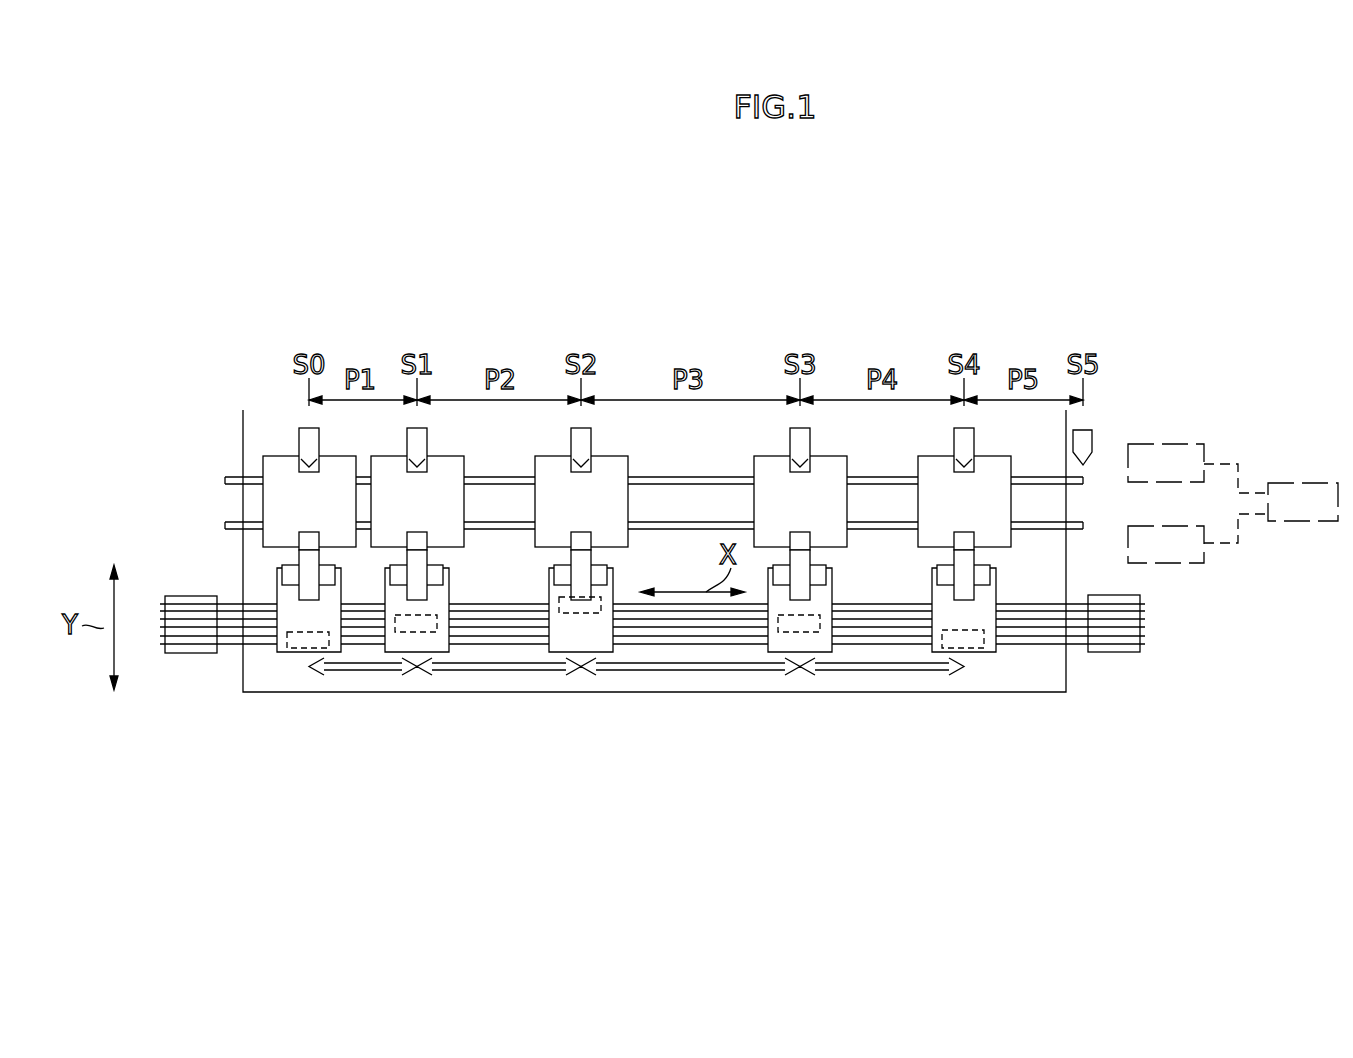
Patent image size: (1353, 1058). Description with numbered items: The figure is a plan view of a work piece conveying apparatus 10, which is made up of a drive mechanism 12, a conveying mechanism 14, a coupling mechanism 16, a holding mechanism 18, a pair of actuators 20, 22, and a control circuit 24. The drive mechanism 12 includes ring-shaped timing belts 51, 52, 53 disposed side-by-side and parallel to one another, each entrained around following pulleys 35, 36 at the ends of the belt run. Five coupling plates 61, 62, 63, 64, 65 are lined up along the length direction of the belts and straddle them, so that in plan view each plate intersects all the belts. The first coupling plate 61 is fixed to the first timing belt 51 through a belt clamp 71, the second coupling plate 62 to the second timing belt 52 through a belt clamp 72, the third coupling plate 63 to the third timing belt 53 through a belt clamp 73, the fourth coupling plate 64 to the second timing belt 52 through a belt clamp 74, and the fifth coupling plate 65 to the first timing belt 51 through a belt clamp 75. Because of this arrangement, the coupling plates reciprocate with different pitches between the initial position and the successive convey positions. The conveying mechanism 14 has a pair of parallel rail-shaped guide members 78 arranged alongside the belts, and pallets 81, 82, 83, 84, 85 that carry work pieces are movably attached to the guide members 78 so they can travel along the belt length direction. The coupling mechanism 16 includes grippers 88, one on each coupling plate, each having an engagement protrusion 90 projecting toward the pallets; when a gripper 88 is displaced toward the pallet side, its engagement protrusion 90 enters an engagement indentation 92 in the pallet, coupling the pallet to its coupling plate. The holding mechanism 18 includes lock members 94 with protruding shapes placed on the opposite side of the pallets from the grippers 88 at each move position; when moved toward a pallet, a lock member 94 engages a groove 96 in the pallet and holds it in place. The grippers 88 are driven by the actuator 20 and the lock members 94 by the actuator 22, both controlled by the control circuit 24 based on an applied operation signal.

The work piece conveying apparatus 10 is at (692, 284).
The drive mechanism 12 is at (164, 672).
The conveying mechanism 14 is at (157, 503).
The coupling mechanism 16 is at (223, 583).
The holding mechanism 18 is at (266, 433).
The actuator 20 is at (1196, 564).
The actuator 22 is at (1187, 443).
The control circuit 24 is at (1320, 483).
The following pulley 35 is at (190, 654).
The following pulley 36 is at (1113, 653).
The timing belt 51 is at (1008, 646).
The timing belt 52 is at (1033, 630).
The timing belt 53 is at (1052, 612).
The first coupling plate 61 is at (282, 652).
The second coupling plate 62 is at (390, 652).
The third coupling plate 63 is at (554, 652).
The fourth coupling plate 64 is at (773, 652).
The fifth coupling plate 65 is at (937, 652).
The belt clamp 71 is at (298, 650).
The belt clamp 72 is at (436, 633).
The belt clamp 73 is at (600, 614).
The belt clamp 74 is at (820, 633).
The belt clamp 75 is at (967, 650).
The guide member 78 is at (713, 521).
The pallet 81 is at (328, 456).
The pallet 82 is at (436, 456).
The pallet 83 is at (600, 456).
The pallet 84 is at (819, 456).
The pallet 85 is at (983, 456).
The gripper 88 is at (282, 572).
The engagement protrusion 90 is at (304, 556).
The engagement indentation 92 is at (305, 540).
The lock member 94 is at (300, 428).
The groove 96 is at (309, 464).